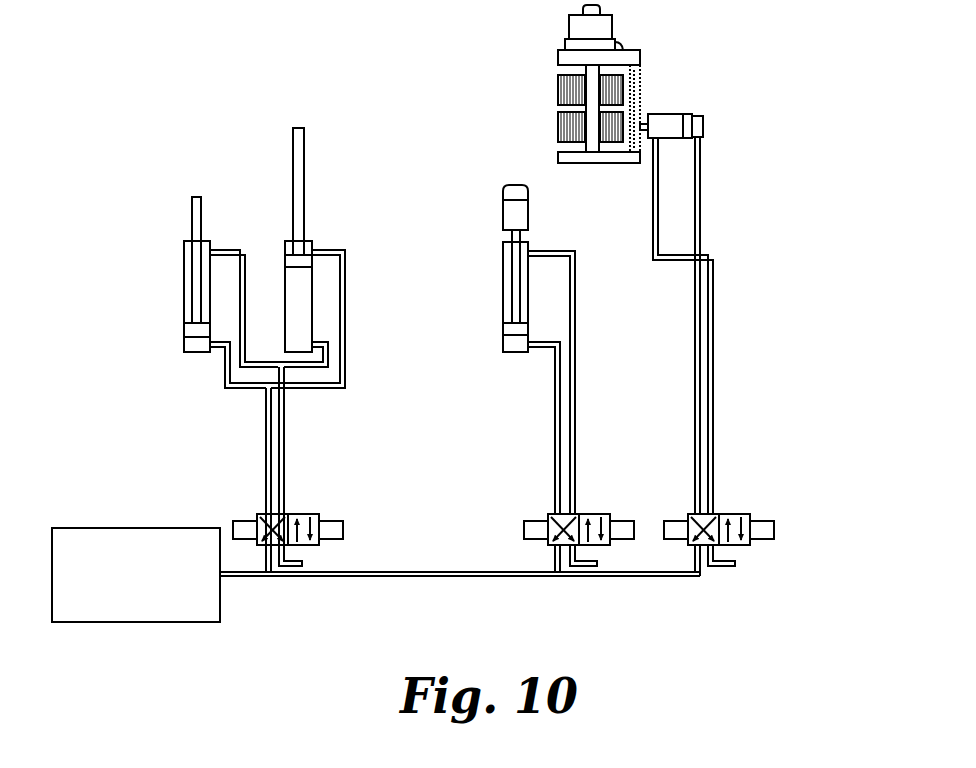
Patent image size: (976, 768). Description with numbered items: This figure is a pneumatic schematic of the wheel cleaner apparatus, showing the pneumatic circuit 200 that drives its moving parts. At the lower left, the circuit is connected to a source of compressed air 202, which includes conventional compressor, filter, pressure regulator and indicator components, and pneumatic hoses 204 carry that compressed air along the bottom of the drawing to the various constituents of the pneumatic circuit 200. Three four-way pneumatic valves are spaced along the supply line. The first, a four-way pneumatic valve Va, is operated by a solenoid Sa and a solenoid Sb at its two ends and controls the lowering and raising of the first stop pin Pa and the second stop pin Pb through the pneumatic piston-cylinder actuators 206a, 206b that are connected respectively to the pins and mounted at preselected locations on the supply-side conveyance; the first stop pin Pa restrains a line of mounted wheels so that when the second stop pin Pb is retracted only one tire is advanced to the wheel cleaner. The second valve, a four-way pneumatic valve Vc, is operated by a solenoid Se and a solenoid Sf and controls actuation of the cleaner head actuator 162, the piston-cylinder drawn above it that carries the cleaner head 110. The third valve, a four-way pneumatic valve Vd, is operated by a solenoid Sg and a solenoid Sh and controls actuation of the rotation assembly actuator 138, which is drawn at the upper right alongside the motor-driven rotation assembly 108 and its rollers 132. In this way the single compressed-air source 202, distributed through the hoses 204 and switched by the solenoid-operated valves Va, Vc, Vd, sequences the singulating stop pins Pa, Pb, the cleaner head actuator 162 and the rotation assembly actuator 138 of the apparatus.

The motor assembly 108 is at (587, 84).
The rollers 132 is at (547, 107).
The rotation assembly actuator 138 is at (689, 109).
The head 110 is at (500, 211).
The cleaner head actuator 162 is at (500, 298).
The pneumatic circuit 200 is at (742, 325).
The source of compressed air 202 is at (123, 527).
The pneumatic hoses 204 is at (284, 428).
The pneumatic piston-cylinder actuator 206a is at (181, 301).
The pneumatic piston-cylinder actuator 206b is at (318, 323).
The first stop pin Pa is at (293, 183).
The second stop pin Pb is at (192, 215).
The four-way pneumatic valve Va is at (293, 513).
The four-way pneumatic valve Vc is at (581, 513).
The four-way pneumatic valve Vd is at (721, 513).
The solenoid Sa is at (338, 521).
The solenoid Sb is at (248, 520).
The solenoid Se is at (618, 520).
The solenoid Sf is at (534, 520).
The solenoid Sg is at (756, 520).
The solenoid Sh is at (674, 520).